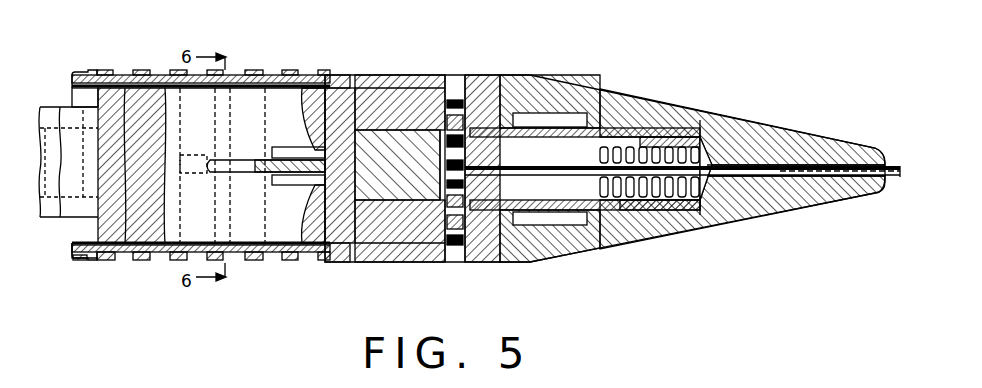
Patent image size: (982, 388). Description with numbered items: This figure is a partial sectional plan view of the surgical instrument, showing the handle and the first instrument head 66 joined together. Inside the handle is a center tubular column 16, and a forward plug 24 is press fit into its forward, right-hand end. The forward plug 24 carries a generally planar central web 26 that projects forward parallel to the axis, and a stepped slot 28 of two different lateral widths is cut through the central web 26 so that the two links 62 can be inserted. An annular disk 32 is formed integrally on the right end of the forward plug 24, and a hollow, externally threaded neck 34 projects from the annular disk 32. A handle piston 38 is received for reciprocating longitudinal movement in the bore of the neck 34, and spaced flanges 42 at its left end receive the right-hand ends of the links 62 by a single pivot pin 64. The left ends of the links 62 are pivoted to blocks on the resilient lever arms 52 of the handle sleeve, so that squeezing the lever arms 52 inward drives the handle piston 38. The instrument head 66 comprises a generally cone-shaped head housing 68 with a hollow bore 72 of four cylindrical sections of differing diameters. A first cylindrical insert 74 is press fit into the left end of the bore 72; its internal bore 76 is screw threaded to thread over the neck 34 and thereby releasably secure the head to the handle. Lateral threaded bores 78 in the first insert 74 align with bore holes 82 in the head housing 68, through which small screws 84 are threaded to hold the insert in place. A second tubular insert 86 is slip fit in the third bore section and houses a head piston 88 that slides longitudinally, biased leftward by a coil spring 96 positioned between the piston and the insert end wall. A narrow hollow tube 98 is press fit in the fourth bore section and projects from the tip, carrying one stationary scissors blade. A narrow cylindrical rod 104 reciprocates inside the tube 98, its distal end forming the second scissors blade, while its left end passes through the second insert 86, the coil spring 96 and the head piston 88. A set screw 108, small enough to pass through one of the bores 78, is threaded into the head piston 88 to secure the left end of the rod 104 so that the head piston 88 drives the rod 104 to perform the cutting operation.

The center tubular column 16 is at (92, 98).
The forward plug 24 is at (80, 257).
The central web 26 is at (248, 100).
The stepped slot 28 is at (282, 138).
The annular disk 32 is at (333, 73).
The hollow neck 34 is at (358, 262).
The handle piston 38 is at (317, 263).
The spaced flanges 42 is at (350, 147).
The resilient lever arms 52 is at (143, 70).
The links 62 is at (268, 160).
The pivot pin 64 is at (293, 263).
The instrument head 66 is at (644, 88).
The head housing 68 is at (698, 120).
The hollow bore 72 is at (585, 210).
The first cylindrical insert 74 is at (397, 262).
The internal bore of first insert 76 is at (425, 262).
The lateral screw threaded bores 78 is at (458, 100).
The bore holes 82 is at (448, 80).
The small screws 84 is at (487, 97).
The second tubular insert 86 is at (617, 113).
The head piston 88 is at (575, 123).
The coil spring 96 is at (705, 212).
The narrow hollow tube 98 is at (783, 163).
The cylindrical rod 104 is at (812, 183).
The set screw 108 is at (522, 110).